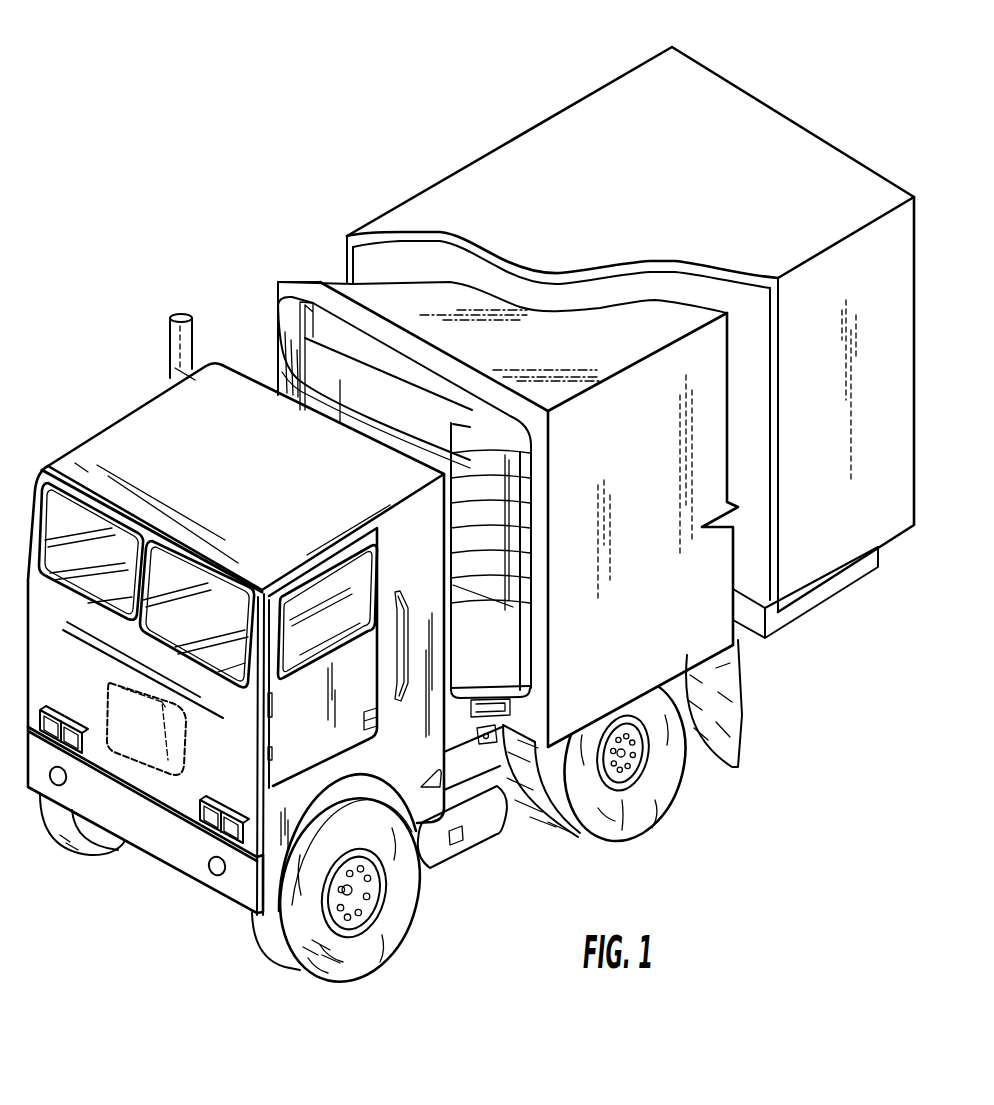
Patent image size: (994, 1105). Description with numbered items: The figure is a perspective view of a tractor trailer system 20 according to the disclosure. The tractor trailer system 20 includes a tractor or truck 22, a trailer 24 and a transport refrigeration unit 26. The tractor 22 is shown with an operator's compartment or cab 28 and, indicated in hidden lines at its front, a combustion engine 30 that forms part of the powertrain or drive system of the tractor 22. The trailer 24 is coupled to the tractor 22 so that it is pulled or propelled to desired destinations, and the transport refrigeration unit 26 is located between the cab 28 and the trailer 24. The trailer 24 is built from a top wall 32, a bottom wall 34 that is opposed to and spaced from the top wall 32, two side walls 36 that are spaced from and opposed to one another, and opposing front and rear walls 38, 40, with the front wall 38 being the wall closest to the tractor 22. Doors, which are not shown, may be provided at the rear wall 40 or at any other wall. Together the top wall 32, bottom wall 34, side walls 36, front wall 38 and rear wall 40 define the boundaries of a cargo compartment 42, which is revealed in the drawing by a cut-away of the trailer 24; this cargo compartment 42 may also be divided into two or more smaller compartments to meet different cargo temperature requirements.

The tractor trailer system 20 is at (130, 207).
The tractor 22 is at (86, 443).
The trailer 24 is at (462, 164).
The transport refrigeration unit 26 is at (309, 296).
The cab 28 is at (320, 630).
The combustion engine 30 is at (143, 767).
The top wall 32 is at (547, 132).
The bottom wall 34 is at (855, 563).
The side walls 36 is at (876, 503).
The front wall 38 is at (502, 398).
The rear wall 40 is at (823, 135).
The cargo compartment 42 is at (700, 290).